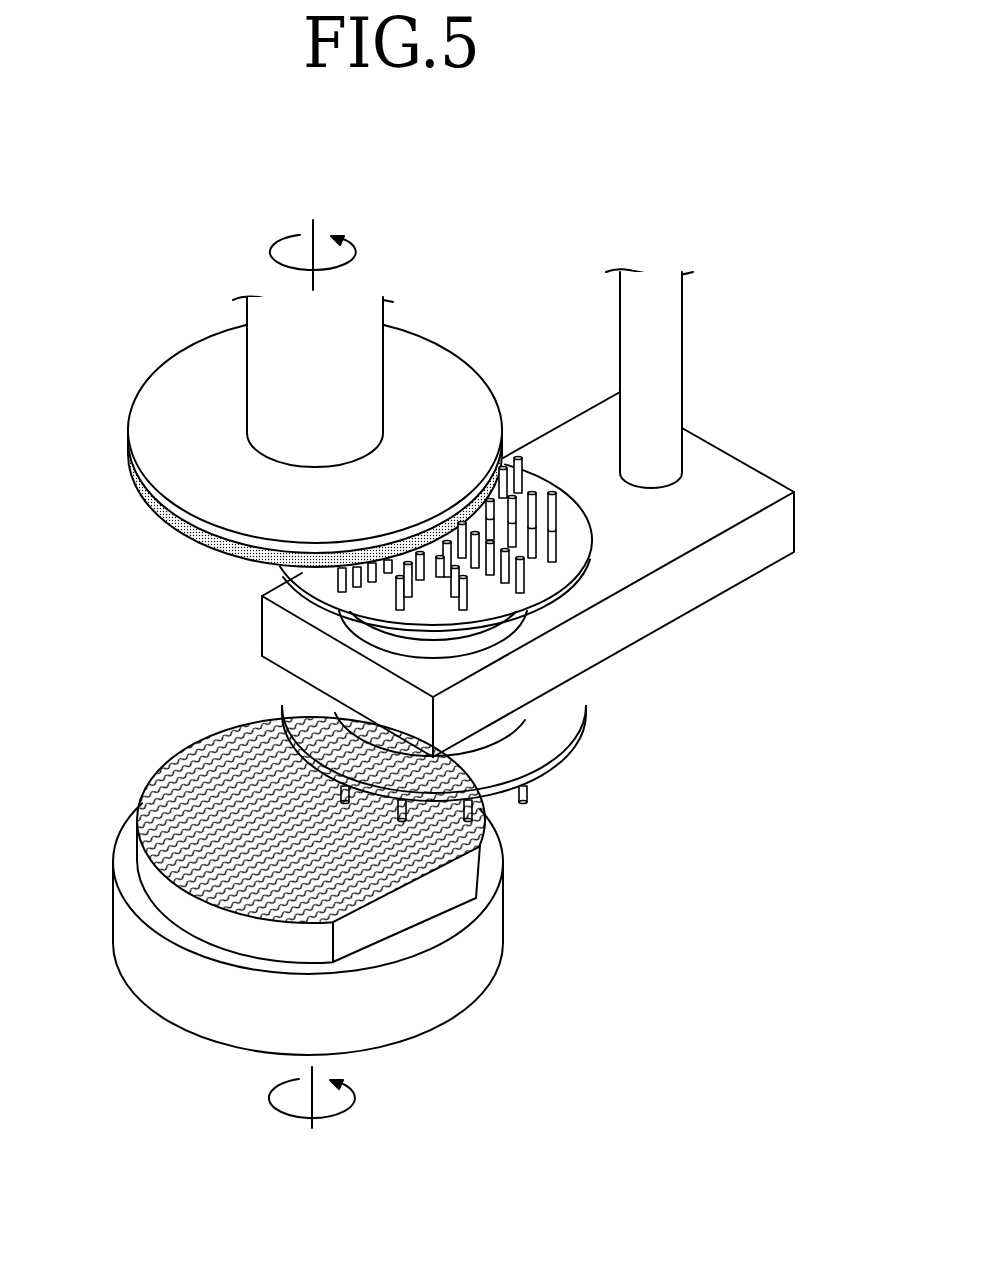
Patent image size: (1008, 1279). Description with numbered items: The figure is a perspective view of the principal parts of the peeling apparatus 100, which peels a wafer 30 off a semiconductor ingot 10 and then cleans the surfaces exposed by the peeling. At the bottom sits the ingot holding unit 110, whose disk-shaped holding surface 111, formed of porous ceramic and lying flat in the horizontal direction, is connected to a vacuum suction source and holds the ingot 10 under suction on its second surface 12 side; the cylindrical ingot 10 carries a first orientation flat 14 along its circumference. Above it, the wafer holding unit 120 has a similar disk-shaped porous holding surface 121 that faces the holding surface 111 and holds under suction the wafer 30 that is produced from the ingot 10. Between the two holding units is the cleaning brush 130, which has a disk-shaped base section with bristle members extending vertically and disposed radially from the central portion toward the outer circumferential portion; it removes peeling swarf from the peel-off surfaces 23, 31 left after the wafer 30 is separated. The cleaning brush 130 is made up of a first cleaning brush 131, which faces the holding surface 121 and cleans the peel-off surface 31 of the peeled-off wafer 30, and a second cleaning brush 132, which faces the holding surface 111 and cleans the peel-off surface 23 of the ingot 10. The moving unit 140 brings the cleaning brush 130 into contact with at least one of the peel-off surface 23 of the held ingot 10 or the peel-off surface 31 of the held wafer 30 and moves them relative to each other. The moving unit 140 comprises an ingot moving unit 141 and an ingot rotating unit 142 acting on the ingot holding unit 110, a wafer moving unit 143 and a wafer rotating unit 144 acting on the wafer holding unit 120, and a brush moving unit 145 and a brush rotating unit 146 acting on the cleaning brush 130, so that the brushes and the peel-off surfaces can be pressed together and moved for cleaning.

The ingot 10 is at (123, 795).
The second surface 12 is at (263, 962).
The first orientation flat 14 is at (410, 907).
The peel-off surface 23 is at (212, 757).
The wafer 30 is at (178, 520).
The peel-off surface 31 is at (227, 560).
The peeling apparatus 100 is at (186, 280).
The ingot holding unit 110 is at (185, 1007).
The holding surface 111 is at (477, 907).
The wafer holding unit 120 is at (175, 402).
The holding surface 121 is at (150, 507).
The cleaning brush 130 is at (632, 715).
The first cleaning brush 131 is at (540, 458).
The second cleaning brush 132 is at (545, 814).
The moving unit 140 is at (412, 343).
The ingot moving unit 141 is at (408, 1092).
The ingot rotating unit 142 is at (364, 1059).
The wafer moving unit 143 is at (412, 343).
The wafer rotating unit 144 is at (361, 360).
The brush moving unit 145 is at (660, 336).
The brush rotating unit 146 is at (455, 647).